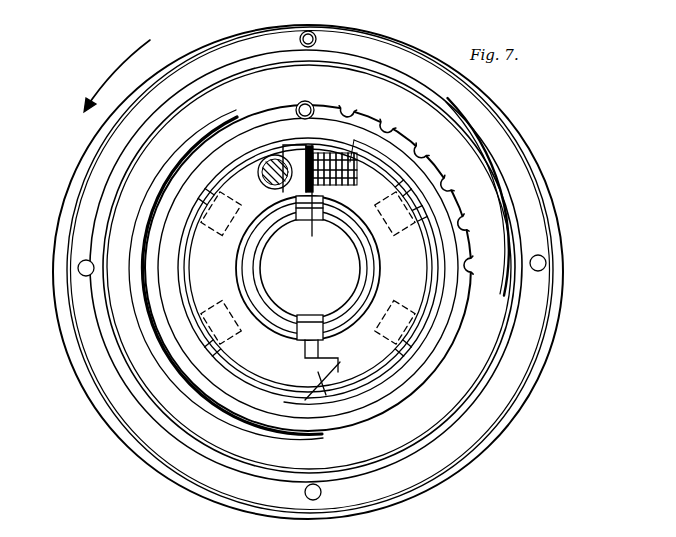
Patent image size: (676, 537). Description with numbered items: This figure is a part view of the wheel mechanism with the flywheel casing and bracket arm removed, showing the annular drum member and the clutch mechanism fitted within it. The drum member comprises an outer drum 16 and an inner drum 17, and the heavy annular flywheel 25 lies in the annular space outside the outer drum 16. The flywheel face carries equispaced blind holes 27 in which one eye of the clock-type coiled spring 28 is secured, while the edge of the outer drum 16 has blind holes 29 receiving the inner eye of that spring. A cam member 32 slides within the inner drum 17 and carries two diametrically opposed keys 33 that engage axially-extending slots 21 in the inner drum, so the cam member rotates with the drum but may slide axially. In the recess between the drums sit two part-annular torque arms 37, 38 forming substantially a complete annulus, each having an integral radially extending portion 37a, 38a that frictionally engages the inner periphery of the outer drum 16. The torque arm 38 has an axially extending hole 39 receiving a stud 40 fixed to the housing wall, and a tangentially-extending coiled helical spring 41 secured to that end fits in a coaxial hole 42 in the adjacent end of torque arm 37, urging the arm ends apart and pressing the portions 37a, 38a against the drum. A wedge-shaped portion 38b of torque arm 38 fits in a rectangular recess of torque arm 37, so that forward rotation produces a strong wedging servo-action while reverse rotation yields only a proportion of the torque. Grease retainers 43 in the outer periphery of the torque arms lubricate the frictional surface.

The outer drum 16 is at (440, 365).
The inner drum 17 is at (360, 278).
The axially-extending slots 21 is at (322, 210).
The annular flywheel 25 is at (243, 30).
The blind holes 27 is at (88, 269).
The clock-type coiled spring 28 is at (236, 430).
The blind holes 29 is at (388, 142).
The cam member 32 is at (270, 270).
The keys 33 is at (315, 330).
The torque arm 37 is at (392, 366).
The radially extending portion 37a is at (356, 140).
The torque arm 38 is at (233, 190).
The radially extending portion 38a is at (283, 398).
The wedge-shaped portion 38b is at (323, 395).
The axially extending hole 39 is at (269, 157).
The stud 40 is at (298, 105).
The coiled helical spring 41 is at (298, 197).
The coaxial hole 42 is at (330, 150).
The grease retainers 43 is at (427, 322).